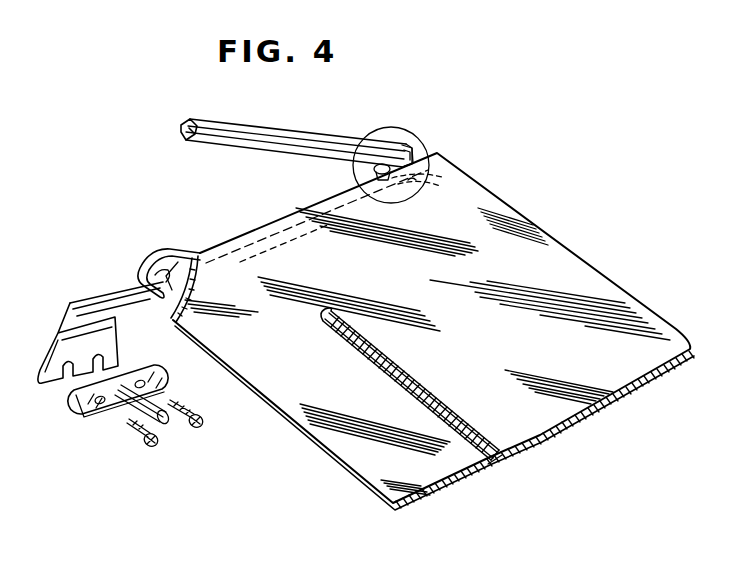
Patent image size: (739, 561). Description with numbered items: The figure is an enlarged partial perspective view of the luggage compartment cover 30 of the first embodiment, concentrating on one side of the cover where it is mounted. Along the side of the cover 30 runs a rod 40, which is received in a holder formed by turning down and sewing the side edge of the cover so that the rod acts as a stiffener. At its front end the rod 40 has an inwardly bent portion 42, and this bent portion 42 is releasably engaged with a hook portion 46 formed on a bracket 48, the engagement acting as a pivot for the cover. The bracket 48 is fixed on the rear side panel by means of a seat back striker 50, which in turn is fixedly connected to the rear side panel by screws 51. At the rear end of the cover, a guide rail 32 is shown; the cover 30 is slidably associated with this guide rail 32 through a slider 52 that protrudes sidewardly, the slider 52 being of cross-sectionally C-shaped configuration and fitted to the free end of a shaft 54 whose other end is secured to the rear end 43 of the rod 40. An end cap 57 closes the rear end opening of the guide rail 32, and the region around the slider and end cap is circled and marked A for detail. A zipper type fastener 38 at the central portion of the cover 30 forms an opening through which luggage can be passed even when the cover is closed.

The luggage compartment cover 30 is at (563, 270).
The guide rail 32 is at (304, 133).
The zipper type fastener 38 is at (434, 397).
The rod 40 is at (276, 221).
The inwardly bent portion 42 is at (180, 285).
The rear end of the rod 43 is at (412, 184).
The hook portion 46 is at (165, 247).
The bracket 48 is at (49, 382).
The seat back striker 50 is at (134, 373).
The screws 51 is at (188, 409).
The slider 52 is at (388, 140).
The shaft 54 is at (433, 170).
The end cap 57 is at (414, 151).
The detail area A is at (364, 117).